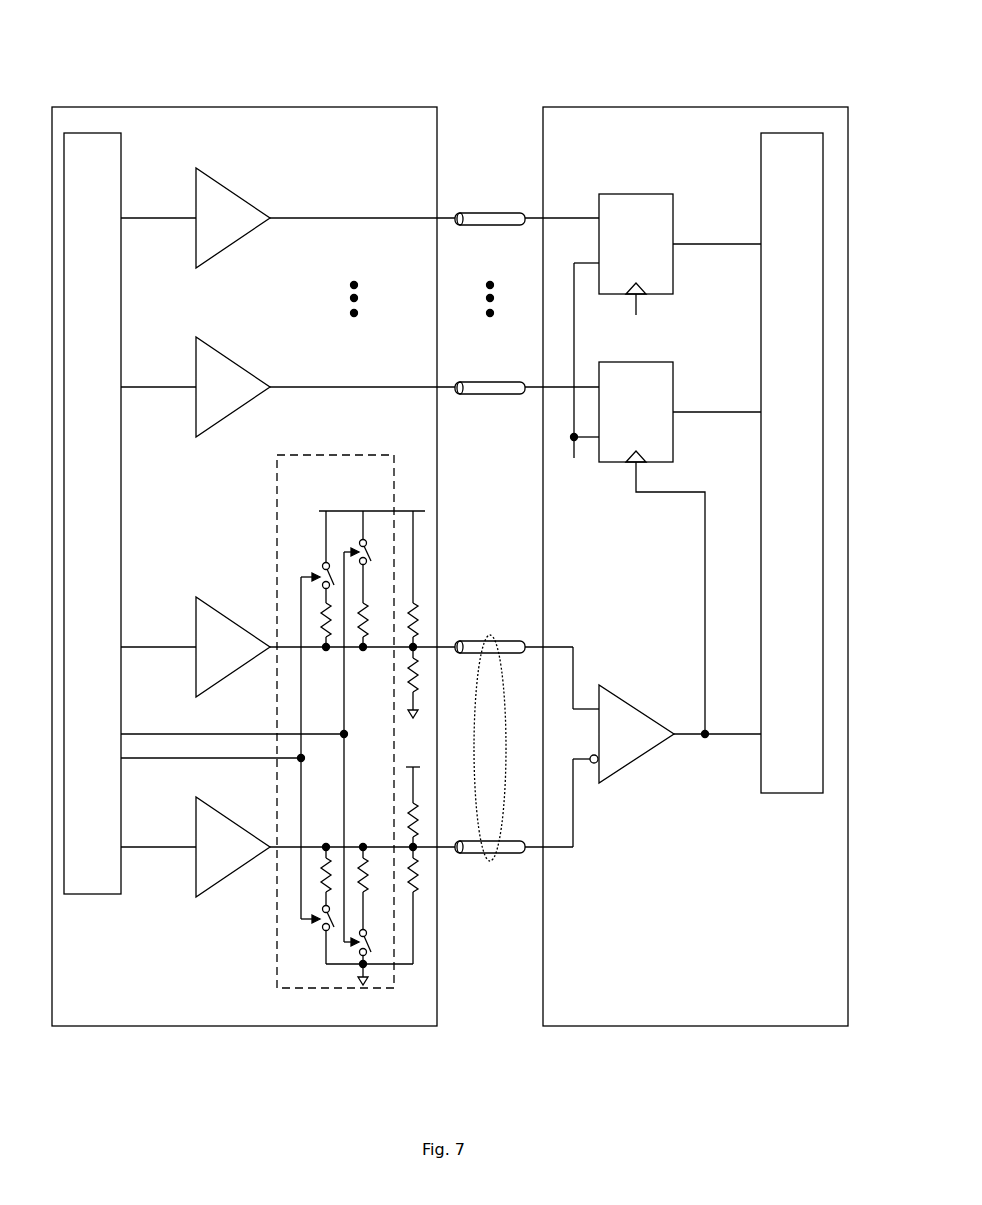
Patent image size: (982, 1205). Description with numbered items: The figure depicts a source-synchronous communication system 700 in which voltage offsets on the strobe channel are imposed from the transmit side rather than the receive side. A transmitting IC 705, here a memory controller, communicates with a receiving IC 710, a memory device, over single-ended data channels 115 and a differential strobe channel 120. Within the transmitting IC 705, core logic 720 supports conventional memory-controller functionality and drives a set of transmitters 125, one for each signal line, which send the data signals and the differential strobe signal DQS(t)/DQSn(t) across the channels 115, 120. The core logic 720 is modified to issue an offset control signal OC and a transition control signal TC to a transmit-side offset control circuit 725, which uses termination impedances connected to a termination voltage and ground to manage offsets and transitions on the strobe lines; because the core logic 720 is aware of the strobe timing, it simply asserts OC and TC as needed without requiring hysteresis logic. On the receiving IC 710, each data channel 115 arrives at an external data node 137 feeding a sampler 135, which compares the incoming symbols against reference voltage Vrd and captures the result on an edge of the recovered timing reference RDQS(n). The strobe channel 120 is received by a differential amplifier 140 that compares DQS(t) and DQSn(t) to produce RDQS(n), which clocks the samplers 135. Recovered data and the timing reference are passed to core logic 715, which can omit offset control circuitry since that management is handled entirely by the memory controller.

The source-synchronous communication system 700 is at (706, 43).
The transmitting IC 705 is at (244, 566).
The receiving IC 710 is at (695, 566).
The core logic 715 is at (792, 463).
The core logic 720 is at (92, 513).
The transmit-side offset control circuit 725 is at (351, 721).
The transmitter 125 is at (233, 532).
The sampler 135 is at (636, 328).
The single-ended channel 115 is at (494, 228).
The differential channel 120 is at (474, 718).
The external data node 137 is at (548, 219).
The amplifier 140 is at (632, 734).